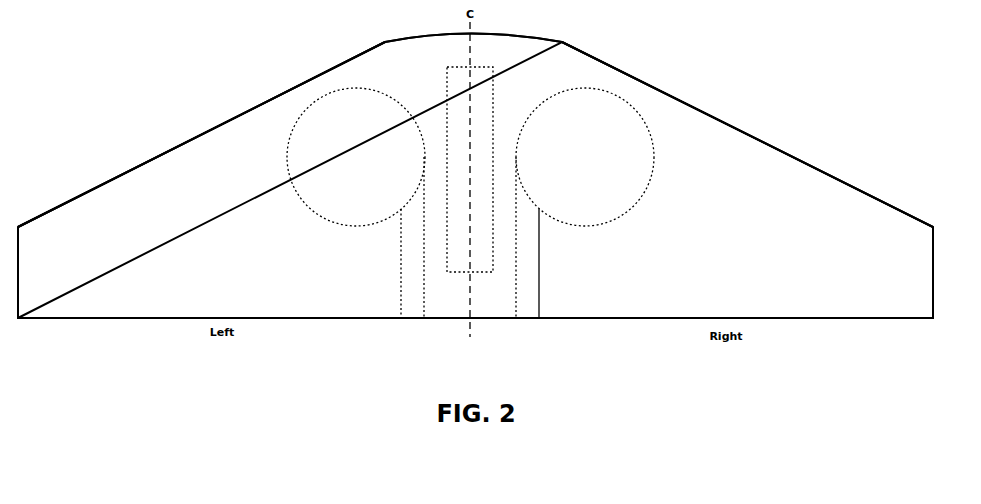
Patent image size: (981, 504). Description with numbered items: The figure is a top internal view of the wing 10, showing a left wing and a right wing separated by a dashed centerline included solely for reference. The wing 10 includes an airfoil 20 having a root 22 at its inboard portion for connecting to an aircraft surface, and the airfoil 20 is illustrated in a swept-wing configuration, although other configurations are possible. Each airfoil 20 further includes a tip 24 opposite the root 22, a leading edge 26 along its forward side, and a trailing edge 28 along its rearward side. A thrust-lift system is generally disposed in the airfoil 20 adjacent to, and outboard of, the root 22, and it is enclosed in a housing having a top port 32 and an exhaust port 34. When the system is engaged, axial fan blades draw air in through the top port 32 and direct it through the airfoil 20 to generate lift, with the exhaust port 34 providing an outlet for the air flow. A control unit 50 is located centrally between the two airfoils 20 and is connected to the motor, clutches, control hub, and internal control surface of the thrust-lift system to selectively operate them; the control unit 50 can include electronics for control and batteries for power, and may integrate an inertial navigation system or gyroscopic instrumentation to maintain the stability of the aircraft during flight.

The wing 10 is at (727, 56).
The airfoil 20 is at (190, 257).
The root 22 is at (448, 55).
The tip 24 is at (18, 282).
The leading edge 26 is at (157, 158).
The trailing edge 28 is at (135, 318).
The top port 32 is at (362, 148).
The exhaust port 34 is at (413, 293).
The control unit 50 is at (463, 145).